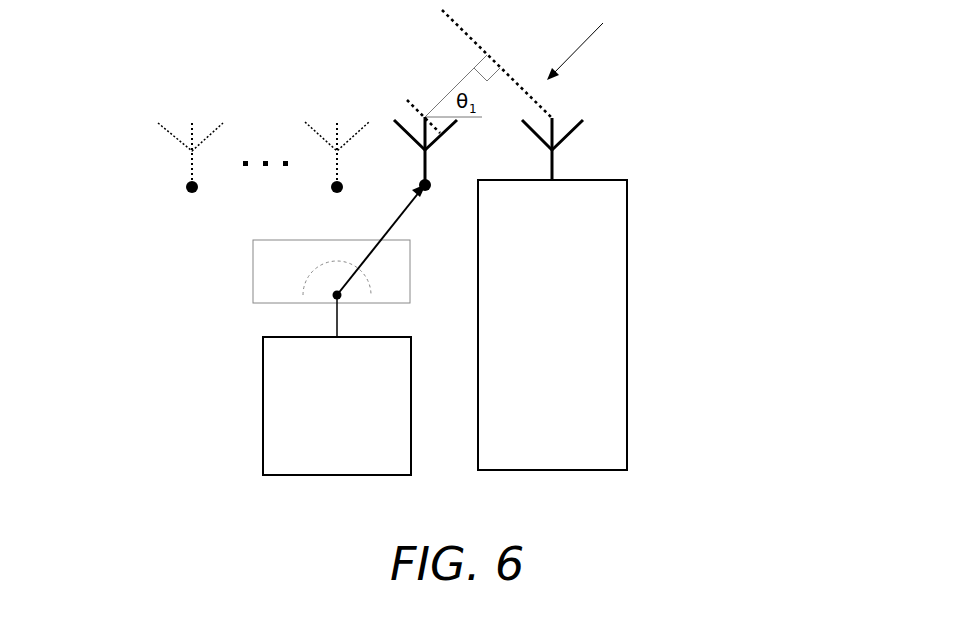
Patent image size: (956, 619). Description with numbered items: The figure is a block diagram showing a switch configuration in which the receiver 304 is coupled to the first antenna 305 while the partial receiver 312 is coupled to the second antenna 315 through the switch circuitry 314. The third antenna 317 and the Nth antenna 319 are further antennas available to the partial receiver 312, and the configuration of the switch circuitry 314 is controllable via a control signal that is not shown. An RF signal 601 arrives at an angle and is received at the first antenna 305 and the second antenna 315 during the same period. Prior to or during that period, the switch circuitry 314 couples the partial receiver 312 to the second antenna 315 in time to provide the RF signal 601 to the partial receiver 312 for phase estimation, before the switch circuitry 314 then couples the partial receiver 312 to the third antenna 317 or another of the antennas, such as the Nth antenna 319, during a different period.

The RF signal RF1 601 is at (590, 42).
The antenna 1 305 is at (554, 165).
The antenna 2 315 is at (427, 157).
The antenna 3 317 is at (337, 122).
The antenna N 319 is at (192, 168).
The switch circuitry 314 is at (300, 273).
The partial receiver 312 is at (358, 446).
The receiver 304 is at (573, 351).